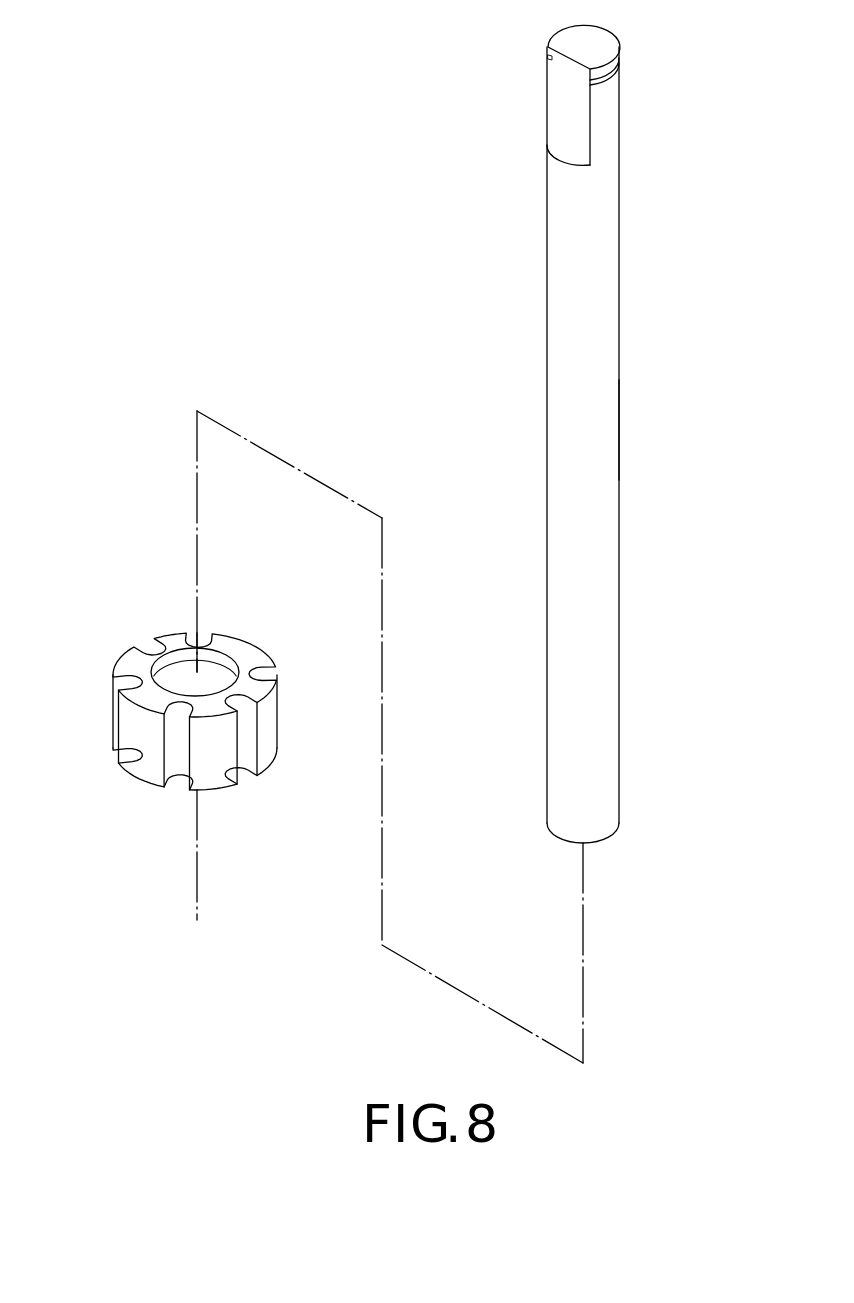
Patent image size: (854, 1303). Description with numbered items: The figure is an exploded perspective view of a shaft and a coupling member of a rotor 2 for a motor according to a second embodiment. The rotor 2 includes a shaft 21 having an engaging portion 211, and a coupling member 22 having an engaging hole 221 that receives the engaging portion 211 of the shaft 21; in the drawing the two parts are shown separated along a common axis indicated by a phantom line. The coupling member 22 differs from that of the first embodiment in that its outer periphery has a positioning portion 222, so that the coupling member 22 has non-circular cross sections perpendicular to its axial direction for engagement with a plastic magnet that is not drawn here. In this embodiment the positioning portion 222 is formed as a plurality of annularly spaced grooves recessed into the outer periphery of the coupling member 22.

The rotor 2 is at (285, 210).
The shaft 21 is at (533, 338).
The engaging portion 211 is at (612, 433).
The coupling member 22 is at (178, 622).
The engaging hole 221 is at (163, 650).
The positioning portion 222 is at (172, 752).